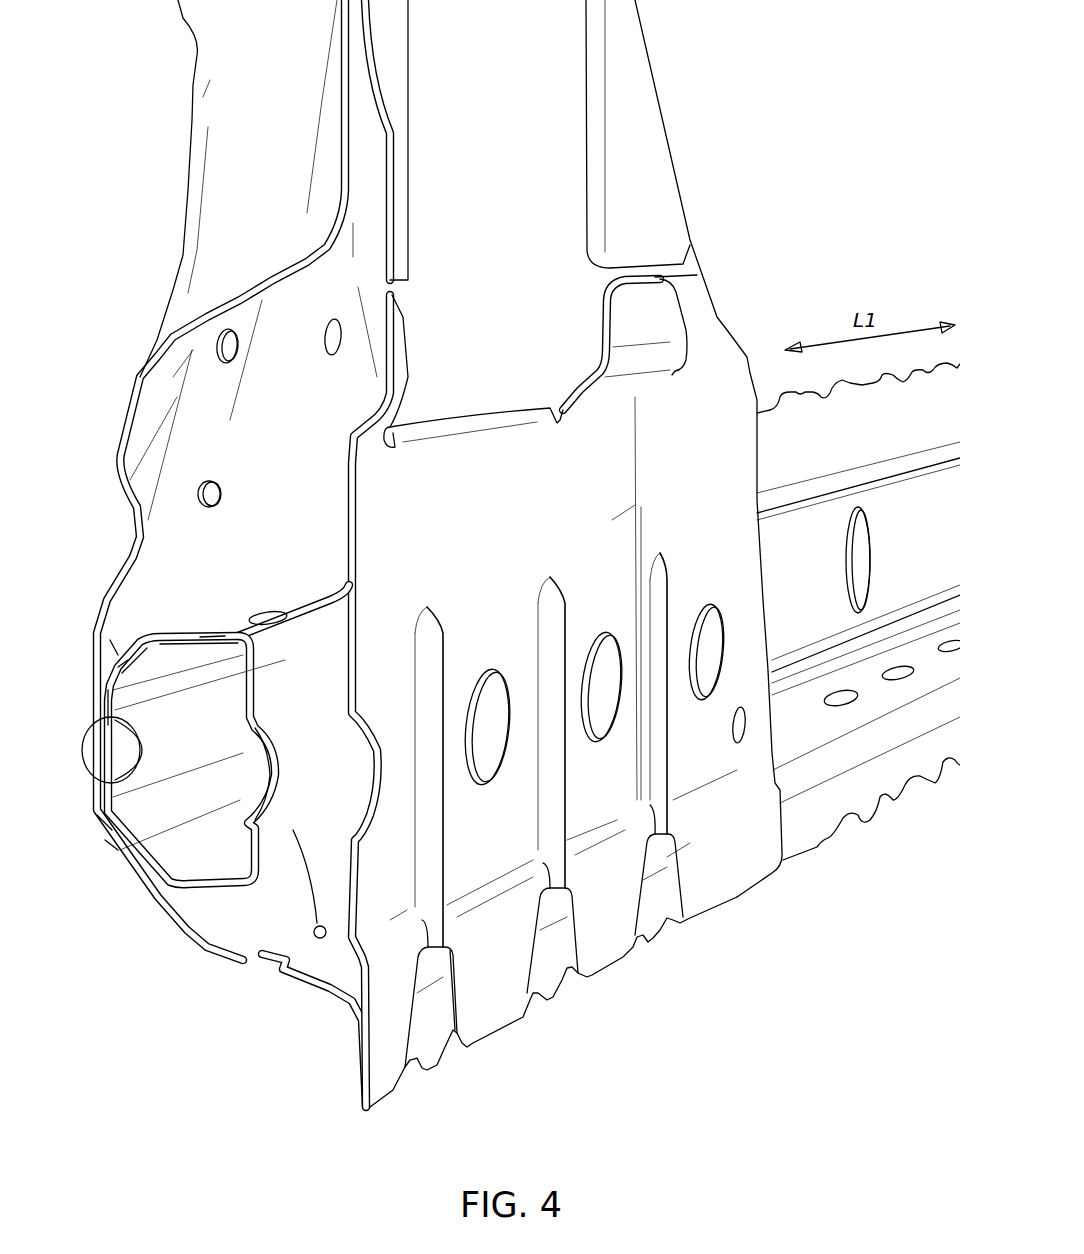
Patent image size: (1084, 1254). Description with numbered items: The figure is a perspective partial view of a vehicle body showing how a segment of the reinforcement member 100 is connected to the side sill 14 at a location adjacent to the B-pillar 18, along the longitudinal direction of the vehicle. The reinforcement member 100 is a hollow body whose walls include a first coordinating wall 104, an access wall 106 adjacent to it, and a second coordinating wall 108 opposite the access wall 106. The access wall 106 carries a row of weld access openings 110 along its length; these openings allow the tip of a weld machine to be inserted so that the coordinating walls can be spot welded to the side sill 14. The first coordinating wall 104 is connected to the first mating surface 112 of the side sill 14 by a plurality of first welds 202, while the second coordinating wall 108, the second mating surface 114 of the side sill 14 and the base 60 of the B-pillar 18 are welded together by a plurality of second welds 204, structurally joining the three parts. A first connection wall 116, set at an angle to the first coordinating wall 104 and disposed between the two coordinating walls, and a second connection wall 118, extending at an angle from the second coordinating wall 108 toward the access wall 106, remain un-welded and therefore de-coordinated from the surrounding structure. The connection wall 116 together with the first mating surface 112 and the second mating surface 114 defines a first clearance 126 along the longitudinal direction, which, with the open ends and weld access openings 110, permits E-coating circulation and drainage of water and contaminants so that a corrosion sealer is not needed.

The side sill 14 is at (317, 623).
The B-pillar 18 is at (190, 195).
The base 60 is at (105, 597).
The reinforcement member 100 is at (195, 887).
The first coordinating wall 104 is at (158, 636).
The access wall 106 is at (792, 547).
The second coordinating wall 108 is at (110, 708).
The weld access openings 110 is at (857, 553).
The first mating surface 112 is at (210, 634).
The second mating surface 114 is at (107, 833).
The first connection wall 116 is at (123, 660).
The second connection wall 118 is at (107, 843).
The first clearance 126 is at (107, 650).
The first welds 202 is at (265, 612).
The second welds 204 is at (83, 750).